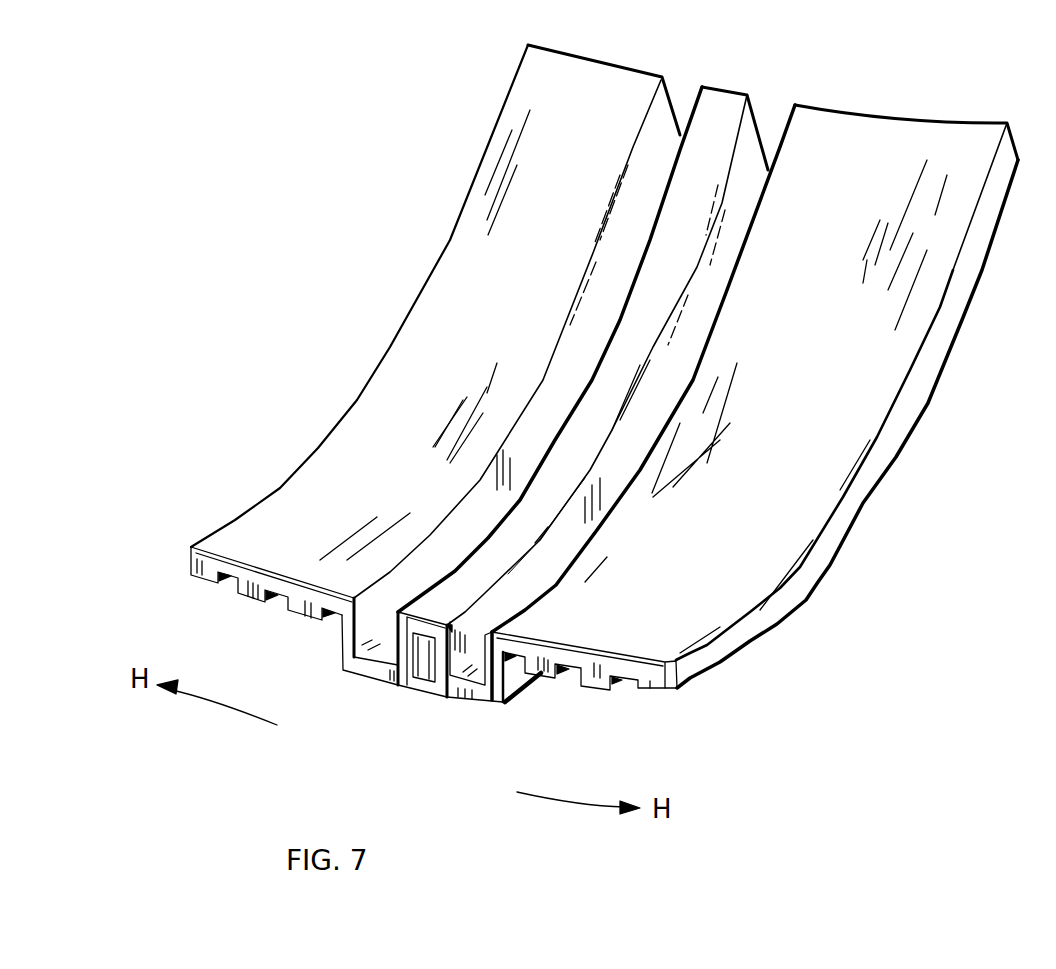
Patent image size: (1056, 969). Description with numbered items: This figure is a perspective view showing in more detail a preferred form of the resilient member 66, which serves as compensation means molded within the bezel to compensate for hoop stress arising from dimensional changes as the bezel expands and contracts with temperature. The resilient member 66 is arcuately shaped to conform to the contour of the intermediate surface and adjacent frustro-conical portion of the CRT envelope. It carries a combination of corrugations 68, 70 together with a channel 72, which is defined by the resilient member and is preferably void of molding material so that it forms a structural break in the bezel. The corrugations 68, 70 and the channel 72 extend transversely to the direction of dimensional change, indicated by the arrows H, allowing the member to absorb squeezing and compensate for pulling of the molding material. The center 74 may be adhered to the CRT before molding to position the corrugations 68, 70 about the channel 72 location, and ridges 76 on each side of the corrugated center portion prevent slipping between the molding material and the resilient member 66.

The resilient member 66 is at (468, 239).
The corrugation 68 is at (397, 613).
The corrugation 70 is at (463, 686).
The channel 72 is at (427, 688).
The center 74 is at (437, 597).
The ridges 76 is at (258, 597).